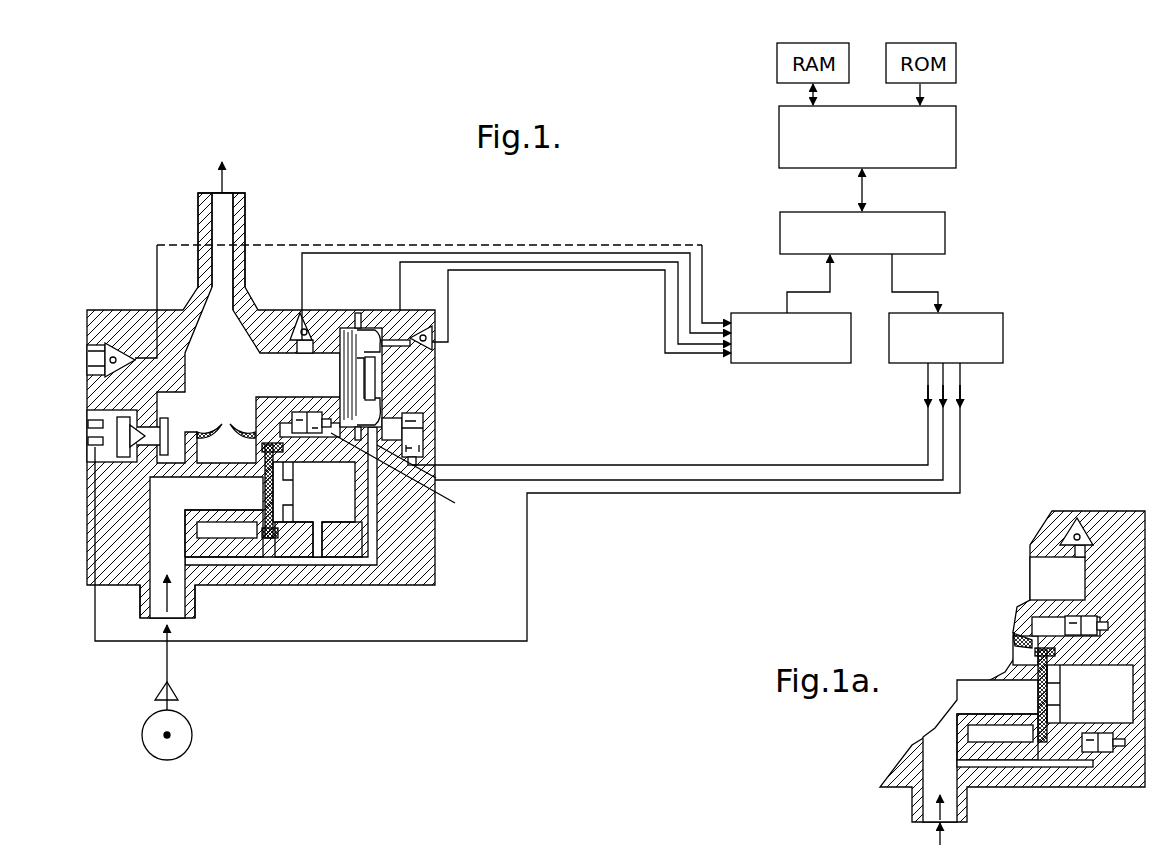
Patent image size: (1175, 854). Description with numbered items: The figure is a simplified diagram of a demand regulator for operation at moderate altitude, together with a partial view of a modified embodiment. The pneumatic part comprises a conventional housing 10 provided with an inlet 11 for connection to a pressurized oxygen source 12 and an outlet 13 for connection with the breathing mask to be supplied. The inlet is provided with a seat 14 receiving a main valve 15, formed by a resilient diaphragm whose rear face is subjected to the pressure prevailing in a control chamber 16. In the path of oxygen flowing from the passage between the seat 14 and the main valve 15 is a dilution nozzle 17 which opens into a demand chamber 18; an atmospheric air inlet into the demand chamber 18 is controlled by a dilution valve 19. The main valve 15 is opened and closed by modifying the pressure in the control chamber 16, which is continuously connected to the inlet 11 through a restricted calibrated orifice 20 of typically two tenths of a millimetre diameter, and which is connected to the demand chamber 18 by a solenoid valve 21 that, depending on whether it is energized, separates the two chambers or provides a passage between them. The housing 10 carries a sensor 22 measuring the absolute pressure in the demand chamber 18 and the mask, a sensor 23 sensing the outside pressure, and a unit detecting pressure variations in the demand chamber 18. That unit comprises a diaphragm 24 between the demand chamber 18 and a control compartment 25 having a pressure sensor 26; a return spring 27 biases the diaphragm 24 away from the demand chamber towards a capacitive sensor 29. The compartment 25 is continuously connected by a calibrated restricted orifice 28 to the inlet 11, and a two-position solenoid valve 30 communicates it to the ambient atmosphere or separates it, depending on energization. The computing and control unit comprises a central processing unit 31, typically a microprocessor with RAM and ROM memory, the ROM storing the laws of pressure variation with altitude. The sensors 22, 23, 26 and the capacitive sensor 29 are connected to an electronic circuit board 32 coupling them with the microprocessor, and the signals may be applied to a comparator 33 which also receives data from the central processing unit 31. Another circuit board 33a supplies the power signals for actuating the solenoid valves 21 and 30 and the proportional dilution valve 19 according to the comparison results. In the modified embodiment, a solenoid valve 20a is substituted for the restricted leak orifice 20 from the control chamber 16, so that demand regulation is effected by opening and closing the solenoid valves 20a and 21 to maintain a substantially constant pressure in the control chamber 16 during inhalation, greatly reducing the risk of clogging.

In FIG. 1, the housing 10 is at (116, 318).
In FIG. 1, the inlet 11 is at (140, 603).
In FIG. 1, the pressurized oxygen source 12 is at (143, 733).
In FIG. 1, the outlet 13 is at (205, 218).
In FIG. 1, the seat 14 is at (262, 518).
In FIG. 1, the main valve 15 is at (268, 540).
In FIG. 1, the control chamber 16 is at (286, 512).
In FIG. 1A, the control chamber 16 is at (1052, 705).
In FIG. 1, the dilution nozzle 17 is at (244, 425).
In FIG. 1, the demand chamber 18 is at (235, 353).
In FIG. 1, the dilution valve 19 is at (90, 441).
In FIG. 1, the restricted calibrated orifice 20 is at (332, 540).
In FIG. 1A, the solenoid valve 20a is at (1097, 755).
In FIG. 1, the solenoid valve 21 is at (314, 437).
In FIG. 1A, the solenoid valve 21 is at (1064, 626).
In FIG. 1, the sensor 22 is at (298, 327).
In FIG. 1A, the sensor 22 is at (1058, 535).
In FIG. 1, the sensor 23 is at (98, 352).
In FIG. 1, the diaphragm 24 is at (376, 327).
In FIG. 1, the control compartment 25 is at (372, 412).
In FIG. 1, the pressure sensor 26 is at (430, 336).
In FIG. 1, the return spring 27 is at (345, 330).
In FIG. 1, the calibrated restricted orifice 28 is at (408, 476).
In FIG. 1, the capacitive sensor 29 is at (378, 392).
In FIG. 1, the two-position solenoid valve 30 is at (412, 426).
In FIG. 1, the central processing unit 31 is at (790, 143).
In FIG. 1, the electronic circuit board 32 is at (801, 366).
In FIG. 1, the comparator 33 is at (786, 240).
In FIG. 1, the circuit board 33a is at (913, 366).